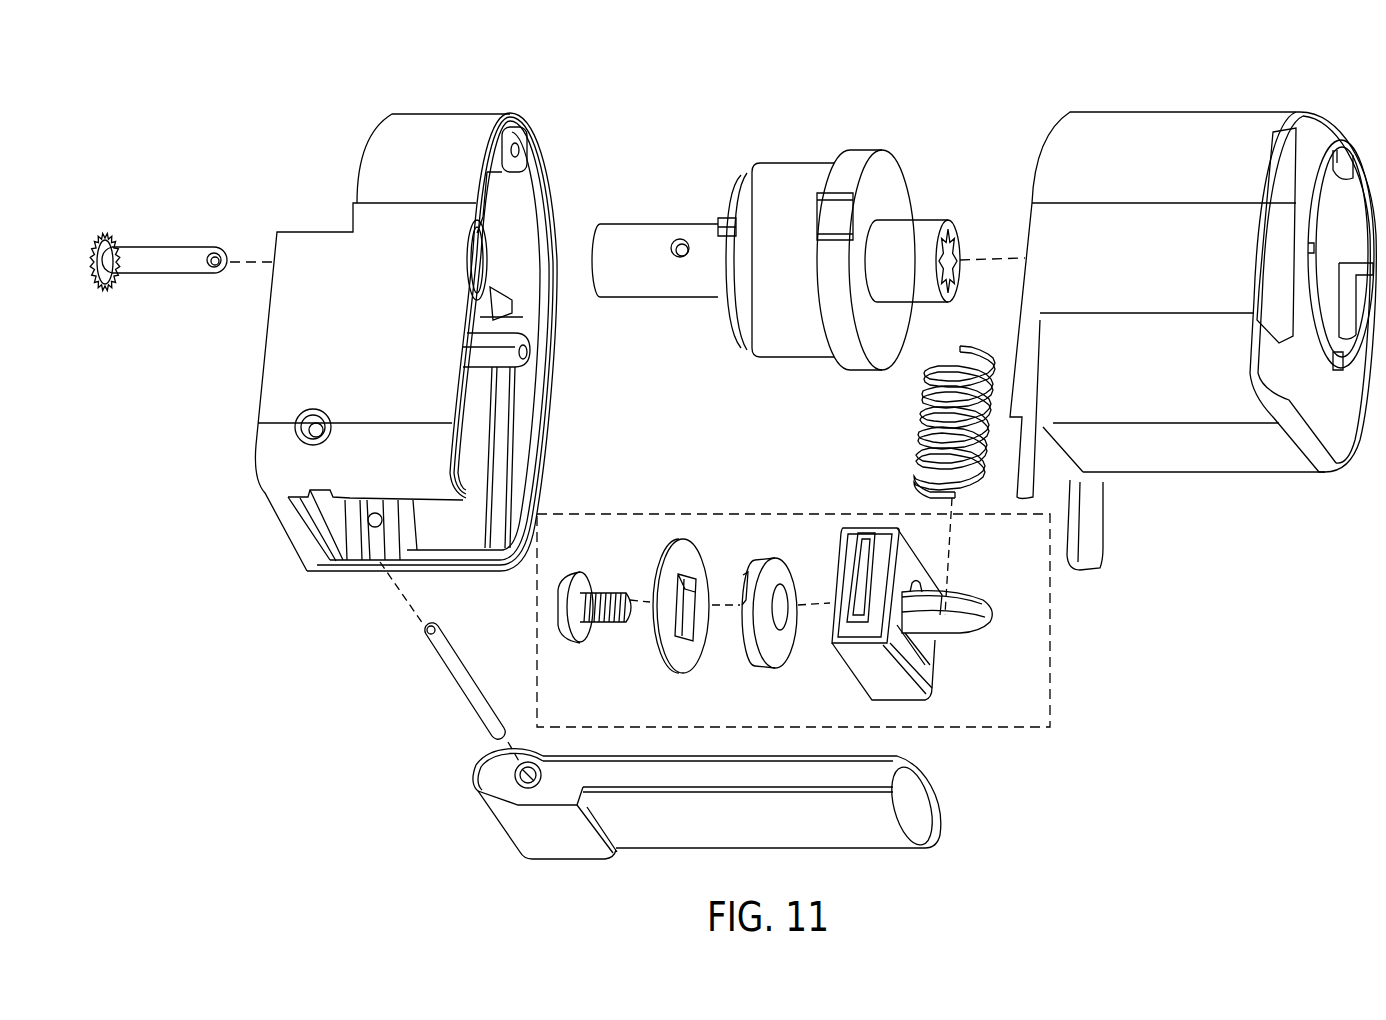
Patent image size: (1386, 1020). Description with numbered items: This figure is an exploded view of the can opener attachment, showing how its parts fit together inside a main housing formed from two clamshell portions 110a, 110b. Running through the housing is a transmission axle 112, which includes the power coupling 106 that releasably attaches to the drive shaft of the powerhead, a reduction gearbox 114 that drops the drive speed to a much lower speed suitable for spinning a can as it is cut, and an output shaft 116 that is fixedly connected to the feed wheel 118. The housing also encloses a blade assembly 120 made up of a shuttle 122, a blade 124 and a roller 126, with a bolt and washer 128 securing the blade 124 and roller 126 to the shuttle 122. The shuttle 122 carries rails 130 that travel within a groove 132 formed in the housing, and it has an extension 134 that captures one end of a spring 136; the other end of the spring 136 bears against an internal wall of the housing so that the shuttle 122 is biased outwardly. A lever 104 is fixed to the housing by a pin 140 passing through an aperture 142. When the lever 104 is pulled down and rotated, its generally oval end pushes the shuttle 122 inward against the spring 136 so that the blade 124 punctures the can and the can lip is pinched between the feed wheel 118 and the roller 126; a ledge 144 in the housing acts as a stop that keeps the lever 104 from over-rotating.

The lever 104 is at (495, 817).
The power coupling 106 is at (917, 233).
The clamshell portion 110a is at (273, 340).
The clamshell portion 110b is at (1348, 132).
The transmission axle 112 is at (784, 82).
The reduction gearbox 114 is at (800, 173).
The output shaft 116 is at (658, 232).
The feed wheel 118 is at (158, 243).
The blade assembly 120 is at (1055, 722).
The shuttle 122 is at (922, 670).
The blade 124 is at (663, 648).
The roller 126 is at (750, 650).
The bolt and washer 128 is at (573, 647).
The rails 130 is at (867, 547).
The groove 132 is at (372, 566).
The extension 134 is at (970, 633).
The spring 136 is at (918, 390).
The pin 140 is at (452, 686).
The aperture 142 is at (297, 432).
The ledge 144 is at (318, 520).